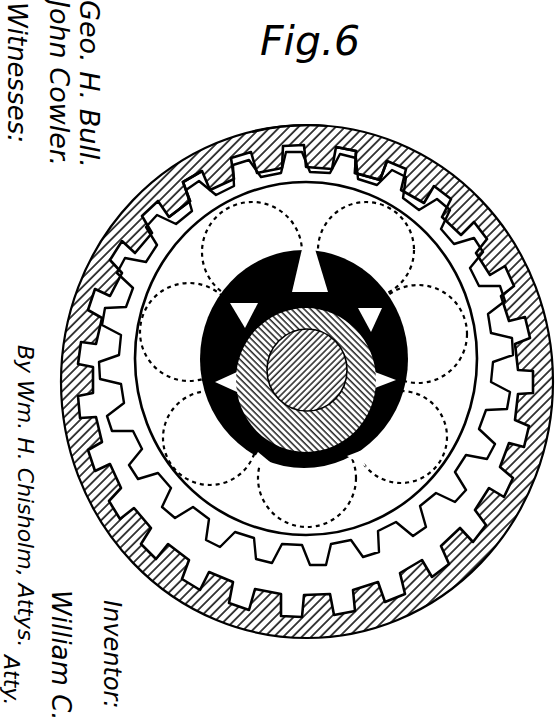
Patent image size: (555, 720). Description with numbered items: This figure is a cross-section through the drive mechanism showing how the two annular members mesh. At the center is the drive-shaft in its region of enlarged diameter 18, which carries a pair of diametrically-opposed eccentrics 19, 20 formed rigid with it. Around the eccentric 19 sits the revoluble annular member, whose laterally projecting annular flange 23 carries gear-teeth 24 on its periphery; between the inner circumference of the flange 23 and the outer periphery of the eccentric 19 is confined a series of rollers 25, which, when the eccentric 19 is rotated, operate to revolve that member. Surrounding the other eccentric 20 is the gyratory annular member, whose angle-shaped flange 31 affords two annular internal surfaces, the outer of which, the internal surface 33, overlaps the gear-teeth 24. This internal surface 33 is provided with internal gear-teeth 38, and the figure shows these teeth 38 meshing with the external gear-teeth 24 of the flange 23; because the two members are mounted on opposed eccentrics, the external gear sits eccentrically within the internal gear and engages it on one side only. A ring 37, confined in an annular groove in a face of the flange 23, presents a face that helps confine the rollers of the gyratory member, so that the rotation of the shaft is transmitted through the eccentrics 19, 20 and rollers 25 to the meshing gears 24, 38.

The enlarged diameter portion of the drive-shaft 18 is at (236, 437).
The eccentric 19 is at (398, 302).
The eccentric 20 is at (205, 403).
The annular flange 23 is at (367, 535).
The gear-teeth 24 is at (390, 177).
The rollers 25 is at (237, 273).
The angle-shaped flange 31 is at (387, 623).
The annular internal surface 33 is at (193, 175).
The ring 37 is at (306, 358).
The gear-teeth 38 is at (272, 140).